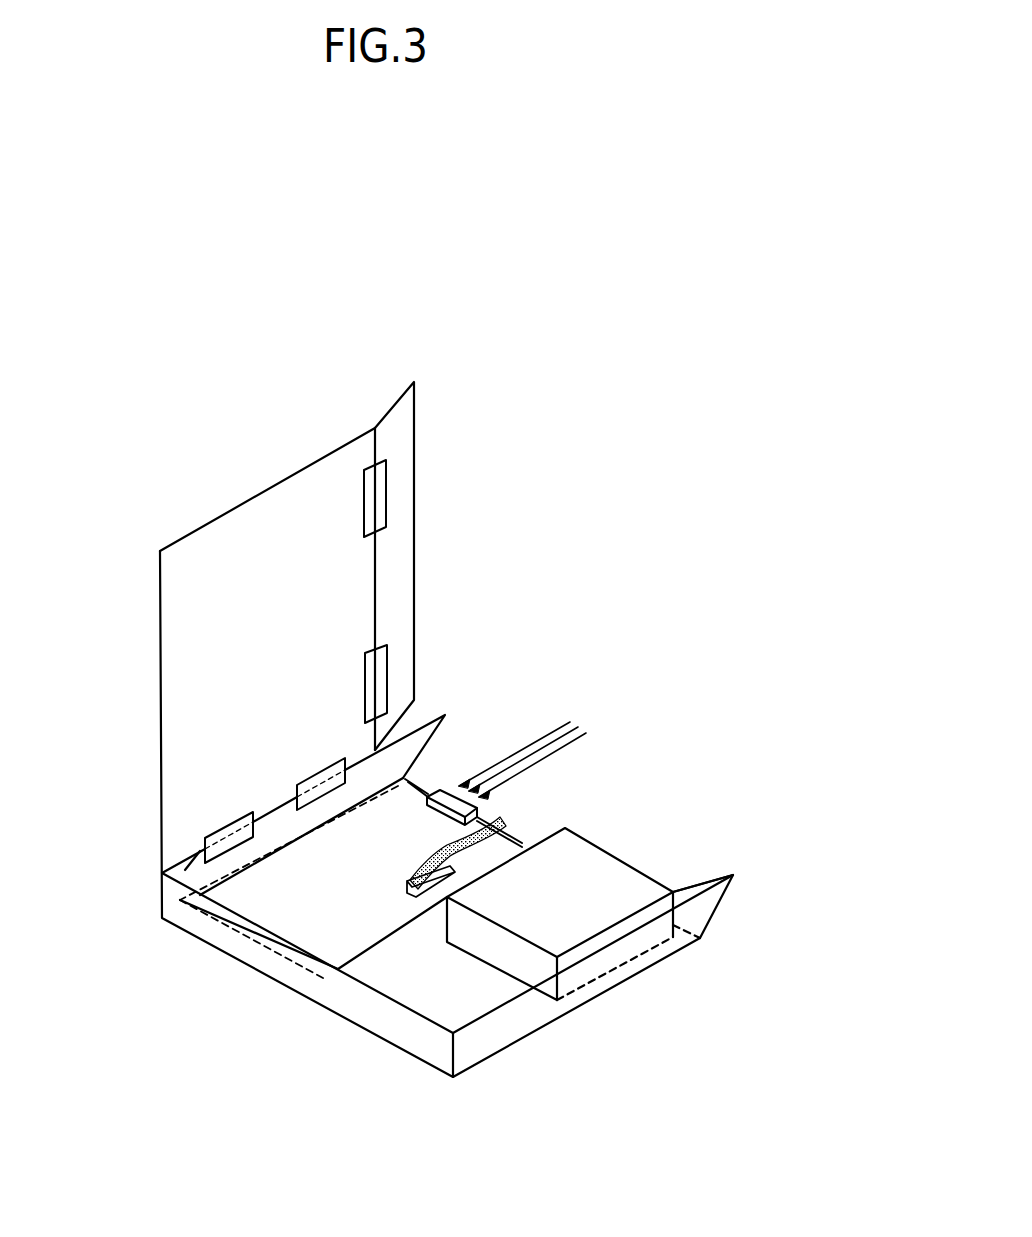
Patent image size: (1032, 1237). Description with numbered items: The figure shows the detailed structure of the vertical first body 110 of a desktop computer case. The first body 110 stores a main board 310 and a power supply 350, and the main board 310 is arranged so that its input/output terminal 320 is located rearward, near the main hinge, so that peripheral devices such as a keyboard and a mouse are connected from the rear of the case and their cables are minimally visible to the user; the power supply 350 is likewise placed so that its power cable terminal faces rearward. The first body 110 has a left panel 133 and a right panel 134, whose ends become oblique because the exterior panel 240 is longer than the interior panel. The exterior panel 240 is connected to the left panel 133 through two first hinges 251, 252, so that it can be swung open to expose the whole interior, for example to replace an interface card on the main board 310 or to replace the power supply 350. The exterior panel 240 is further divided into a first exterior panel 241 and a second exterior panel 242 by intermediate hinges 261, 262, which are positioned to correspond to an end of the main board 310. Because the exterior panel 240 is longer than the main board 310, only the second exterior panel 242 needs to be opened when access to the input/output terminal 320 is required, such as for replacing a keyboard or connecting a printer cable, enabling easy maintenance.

The first body 110 is at (738, 900).
The left panel 133 is at (187, 873).
The right panel 134 is at (517, 1030).
The exterior panel 240 is at (368, 346).
The first exterior panel 241 is at (357, 445).
The second exterior panel 242 is at (407, 418).
The first hinge 251 is at (320, 782).
The first hinge 252 is at (223, 833).
The intermediate hinge 261 is at (380, 661).
The intermediate hinge 262 is at (378, 498).
The main board 310 is at (380, 938).
The input/output terminal 320 is at (447, 790).
The power supply 350 is at (637, 878).